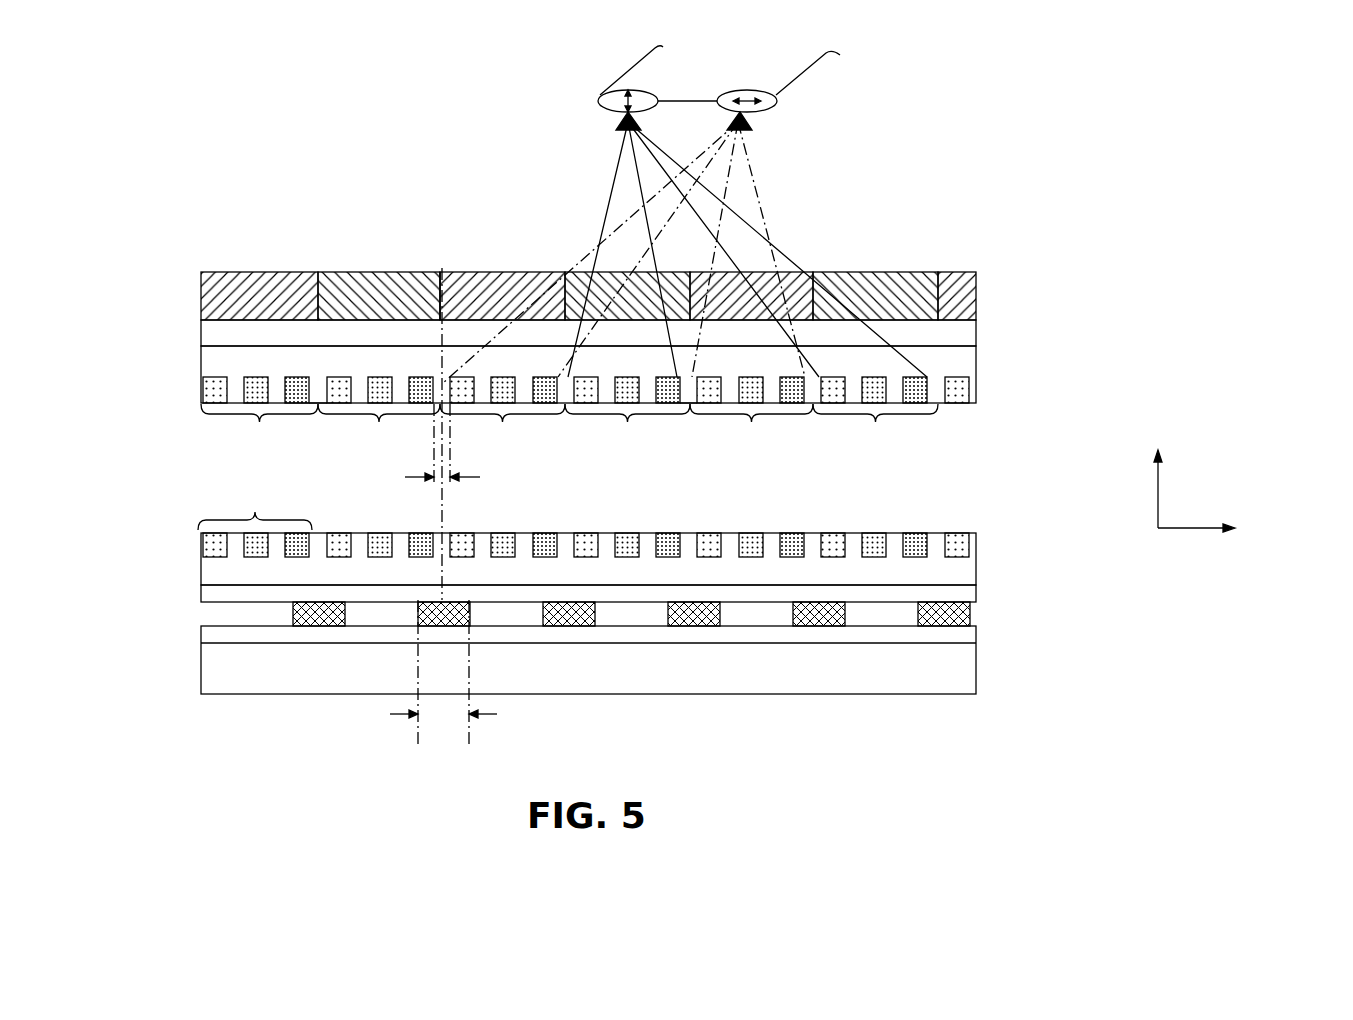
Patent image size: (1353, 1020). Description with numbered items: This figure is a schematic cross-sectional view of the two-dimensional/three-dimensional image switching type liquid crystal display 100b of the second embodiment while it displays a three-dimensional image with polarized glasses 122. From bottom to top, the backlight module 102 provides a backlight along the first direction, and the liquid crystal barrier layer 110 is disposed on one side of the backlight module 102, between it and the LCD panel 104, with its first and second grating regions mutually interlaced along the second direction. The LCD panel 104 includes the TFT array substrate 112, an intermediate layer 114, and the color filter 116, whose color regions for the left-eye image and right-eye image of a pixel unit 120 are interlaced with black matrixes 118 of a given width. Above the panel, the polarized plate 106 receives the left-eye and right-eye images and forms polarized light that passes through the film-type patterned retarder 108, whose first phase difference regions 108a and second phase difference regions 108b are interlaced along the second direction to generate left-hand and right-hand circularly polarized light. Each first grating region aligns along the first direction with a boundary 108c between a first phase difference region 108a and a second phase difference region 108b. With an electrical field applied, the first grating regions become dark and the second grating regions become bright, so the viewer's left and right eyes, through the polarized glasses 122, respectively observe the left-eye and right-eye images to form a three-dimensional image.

The 2D/3D image switching type liquid crystal display 100b is at (1130, 82).
The backlight module 102 is at (962, 668).
The liquid crystal display (LCD) panel 104 is at (678, 394).
The polarized plate 106 is at (967, 330).
The film-type patterned retarder (FPR) 108 is at (630, 379).
The first phase difference regions 108a is at (632, 272).
The second phase difference regions 108b is at (750, 272).
The boundary 108c is at (447, 293).
The liquid crystal barrier layer 110 is at (985, 586).
The TFT array substrate 112 is at (582, 528).
The spacing layer 114 is at (985, 404).
The color filter 116 is at (622, 416).
The black matrixes 118 is at (318, 406).
The pixel unit 120 is at (255, 516).
The polarized glasses 122 is at (813, 72).